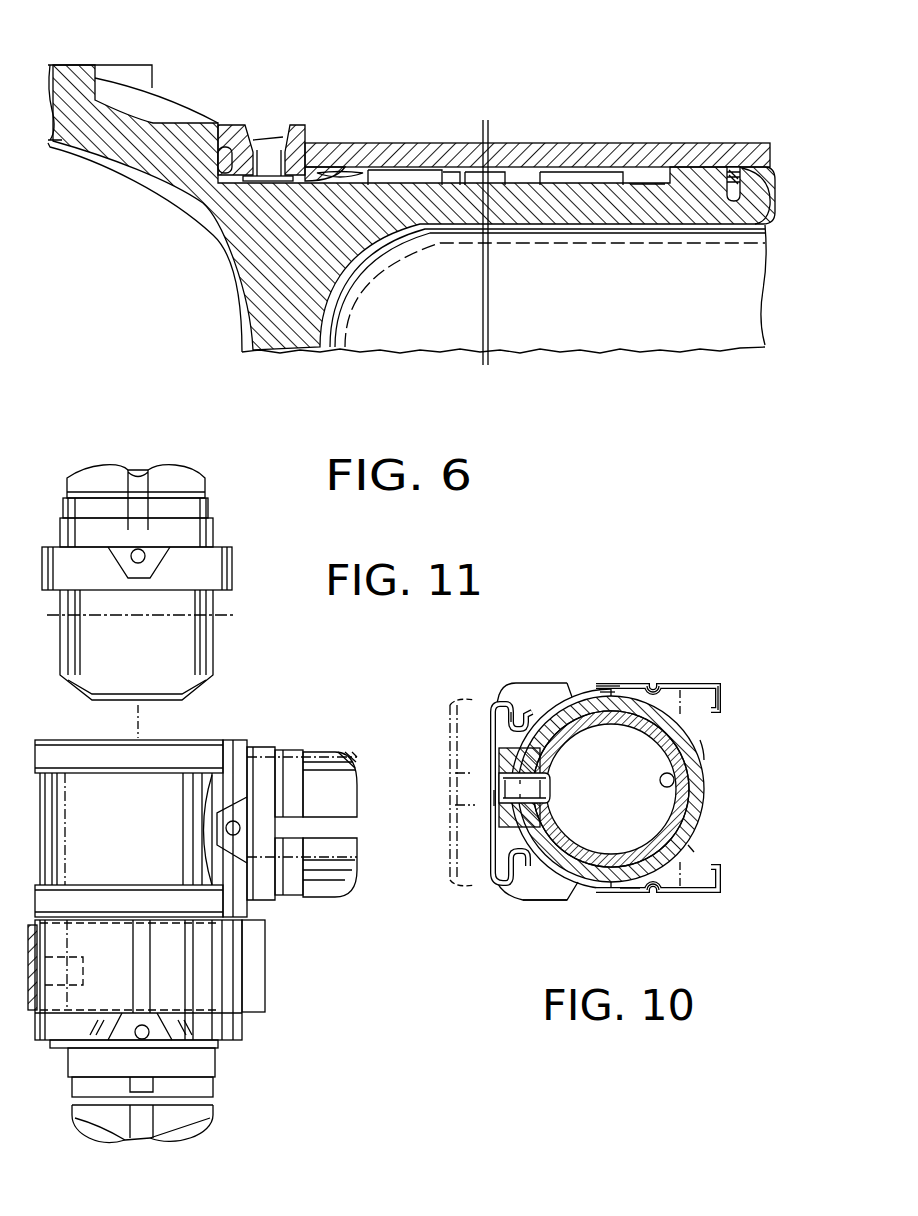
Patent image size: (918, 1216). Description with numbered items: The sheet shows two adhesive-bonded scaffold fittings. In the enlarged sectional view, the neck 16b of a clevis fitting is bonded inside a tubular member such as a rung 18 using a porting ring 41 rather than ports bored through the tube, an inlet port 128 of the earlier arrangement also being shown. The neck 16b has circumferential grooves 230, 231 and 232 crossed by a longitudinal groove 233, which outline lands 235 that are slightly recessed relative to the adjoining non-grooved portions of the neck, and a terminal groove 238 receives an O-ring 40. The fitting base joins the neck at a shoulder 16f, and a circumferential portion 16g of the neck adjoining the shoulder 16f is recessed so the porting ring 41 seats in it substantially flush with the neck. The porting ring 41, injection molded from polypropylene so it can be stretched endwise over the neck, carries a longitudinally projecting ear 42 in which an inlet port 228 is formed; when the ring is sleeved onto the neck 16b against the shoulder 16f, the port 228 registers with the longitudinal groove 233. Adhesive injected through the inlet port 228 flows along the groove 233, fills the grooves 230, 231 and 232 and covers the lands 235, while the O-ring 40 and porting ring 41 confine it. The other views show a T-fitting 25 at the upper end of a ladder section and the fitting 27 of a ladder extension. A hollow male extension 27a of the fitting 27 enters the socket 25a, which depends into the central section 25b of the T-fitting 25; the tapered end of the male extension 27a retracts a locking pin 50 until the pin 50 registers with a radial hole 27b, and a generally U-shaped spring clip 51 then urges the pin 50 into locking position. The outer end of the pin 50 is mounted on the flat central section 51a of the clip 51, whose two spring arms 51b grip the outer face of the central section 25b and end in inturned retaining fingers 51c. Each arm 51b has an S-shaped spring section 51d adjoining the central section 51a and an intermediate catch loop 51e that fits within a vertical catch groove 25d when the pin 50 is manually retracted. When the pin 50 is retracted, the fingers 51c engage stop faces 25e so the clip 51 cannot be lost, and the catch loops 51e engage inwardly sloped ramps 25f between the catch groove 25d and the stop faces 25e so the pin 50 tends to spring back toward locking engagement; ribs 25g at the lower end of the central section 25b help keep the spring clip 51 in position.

In FIG. 6, the neck 16b is at (632, 212).
In FIG. 6, the shoulder 16f is at (215, 160).
In FIG. 6, the circumferential portion of the neck 16g is at (352, 150).
In FIG. 6, the rung 18 is at (680, 141).
In FIG. 6, the O-ring 40 is at (733, 168).
In FIG. 6, the porting ring 41 is at (304, 106).
In FIG. 6, the ear 42 is at (226, 128).
In FIG. 6, the inlet port 128 is at (58, 80).
In FIG. 6, the inlet port 228 is at (265, 125).
In FIG. 6, the circumferential groove 230 is at (450, 174).
In FIG. 6, the circumferential groove 231 is at (517, 174).
In FIG. 6, the circumferential groove 232 is at (643, 174).
In FIG. 6, the longitudinal groove 233 is at (213, 217).
In FIG. 6, the lands 235 is at (570, 174).
In FIG. 6, the terminal groove 238 is at (735, 205).
In FIG. 11, the T-fitting 25 is at (284, 928).
In FIG. 10, the T-fitting 25 is at (707, 834).
In FIG. 10, the socket 25a is at (674, 782).
In FIG. 11, the central section 25b is at (232, 1027).
In FIG. 10, the central section 25b is at (702, 752).
In FIG. 11, the vertical catch groove 25d is at (140, 940).
In FIG. 10, the vertical catch groove 25d is at (607, 692).
In FIG. 10, the stop faces 25e is at (690, 894).
In FIG. 11, the inwardly sloped ramps 25f is at (190, 1000).
In FIG. 10, the inwardly sloped ramps 25f is at (633, 890).
In FIG. 10, the ribs 25g is at (540, 885).
In FIG. 11, the fitting 27 is at (249, 588).
In FIG. 11, the male extension 27a is at (195, 652).
In FIG. 10, the male extension 27a is at (688, 850).
In FIG. 10, the radial hole 27b is at (540, 797).
In FIG. 11, the locking pin 50 is at (83, 970).
In FIG. 10, the locking pin 50 is at (540, 783).
In FIG. 11, the spring clip 51 is at (268, 958).
In FIG. 10, the spring clip 51 is at (490, 738).
In FIG. 10, the flat central section 51a is at (492, 798).
In FIG. 10, the spring arms 51b is at (593, 684).
In FIG. 10, the inturned retaining fingers 51c is at (720, 696).
In FIG. 10, the S-shaped spring section 51d is at (521, 700).
In FIG. 10, the intermediate catch loop 51e is at (655, 686).